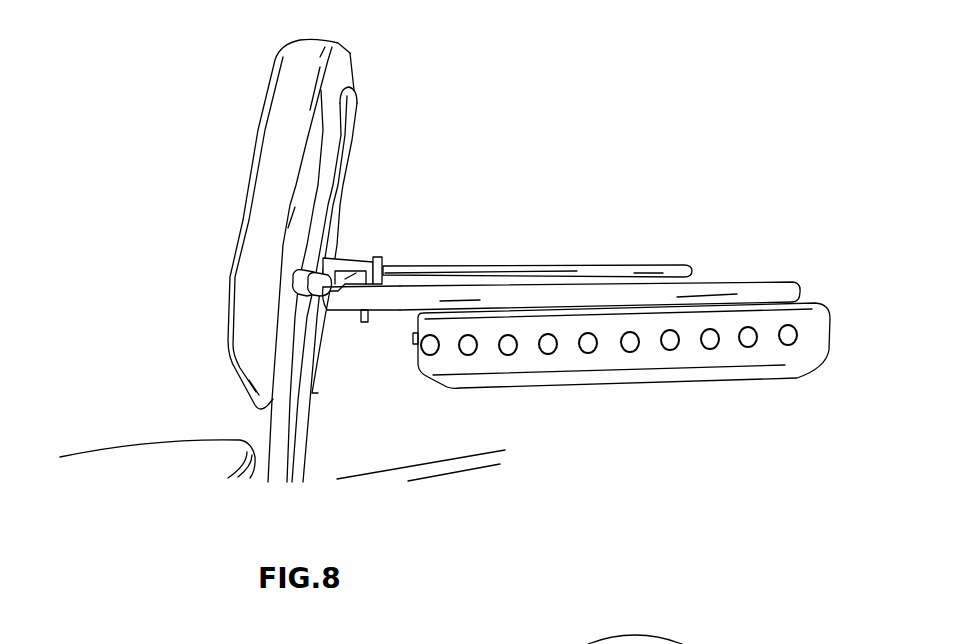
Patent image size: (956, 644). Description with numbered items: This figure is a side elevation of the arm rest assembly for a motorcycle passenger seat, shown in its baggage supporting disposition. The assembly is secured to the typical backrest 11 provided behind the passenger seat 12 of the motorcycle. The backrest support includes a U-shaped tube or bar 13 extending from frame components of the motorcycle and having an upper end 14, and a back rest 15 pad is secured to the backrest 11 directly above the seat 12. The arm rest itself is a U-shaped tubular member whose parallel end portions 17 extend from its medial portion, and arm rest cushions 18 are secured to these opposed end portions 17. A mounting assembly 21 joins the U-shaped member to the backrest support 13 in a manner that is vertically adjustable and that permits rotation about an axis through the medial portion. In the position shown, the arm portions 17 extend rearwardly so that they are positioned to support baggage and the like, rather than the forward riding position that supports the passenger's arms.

The backrest 11 is at (561, 308).
The passenger seat 12 is at (99, 448).
The U-shaped tube or bar 13 is at (330, 187).
The upper end 14 is at (355, 95).
The back rest pad 15 is at (244, 178).
The end portions 17 is at (578, 264).
The arm rest cushions 18 is at (682, 384).
The mounting assembly 21 is at (358, 253).